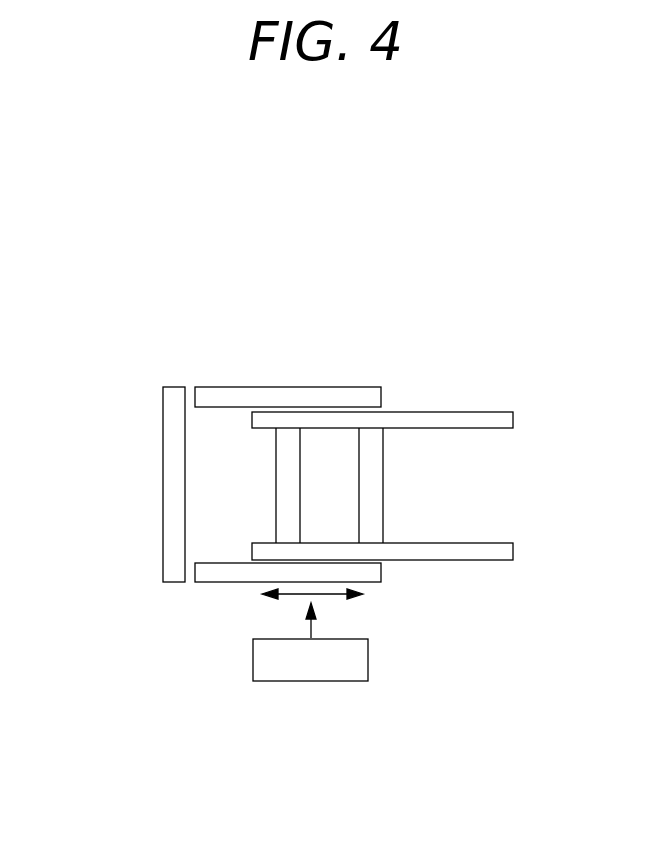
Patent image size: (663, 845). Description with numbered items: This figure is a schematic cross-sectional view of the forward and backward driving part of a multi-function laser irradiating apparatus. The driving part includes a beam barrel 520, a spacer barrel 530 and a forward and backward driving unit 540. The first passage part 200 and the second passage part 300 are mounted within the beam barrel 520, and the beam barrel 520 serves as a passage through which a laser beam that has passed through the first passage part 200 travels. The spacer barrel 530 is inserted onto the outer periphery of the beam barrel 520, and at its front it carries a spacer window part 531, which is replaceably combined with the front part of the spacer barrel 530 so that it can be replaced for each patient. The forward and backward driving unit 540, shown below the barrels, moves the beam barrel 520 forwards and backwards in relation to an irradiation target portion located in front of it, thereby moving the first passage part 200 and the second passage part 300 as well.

The first passage part 200 is at (373, 472).
The second passage part 300 is at (288, 442).
The beam barrel 520 is at (457, 553).
The spacer barrel 530 is at (225, 396).
The spacer window part 531 is at (168, 473).
The forward and backward driving unit 540 is at (312, 681).